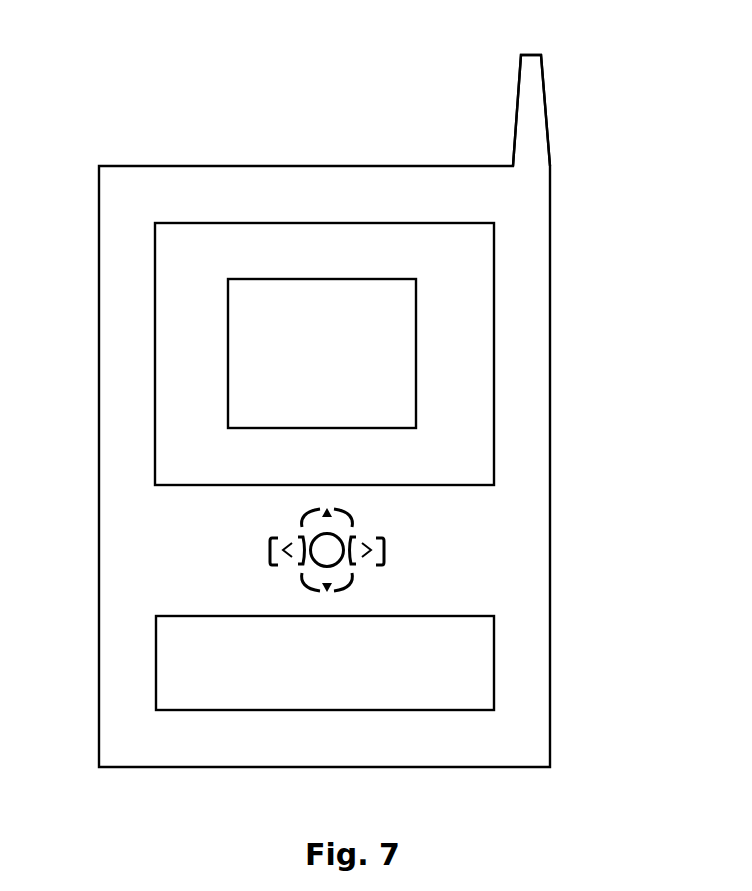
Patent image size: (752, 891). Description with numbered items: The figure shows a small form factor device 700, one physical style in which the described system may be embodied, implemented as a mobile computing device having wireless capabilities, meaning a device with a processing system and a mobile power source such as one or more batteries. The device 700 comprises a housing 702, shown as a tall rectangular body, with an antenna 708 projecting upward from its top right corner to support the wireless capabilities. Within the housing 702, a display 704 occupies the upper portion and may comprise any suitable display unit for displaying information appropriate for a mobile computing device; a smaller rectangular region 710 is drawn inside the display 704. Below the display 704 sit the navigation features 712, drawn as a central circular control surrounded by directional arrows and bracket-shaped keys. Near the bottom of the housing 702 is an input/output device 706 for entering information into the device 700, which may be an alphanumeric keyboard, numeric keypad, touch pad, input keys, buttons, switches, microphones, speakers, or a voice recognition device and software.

The small form factor device 700 is at (363, 388).
The housing 702 is at (550, 467).
The display 704 is at (495, 242).
The input/output (I/O) device 706 is at (494, 653).
The antenna 708 is at (517, 103).
The display window 710 is at (416, 376).
The navigation features 712 is at (416, 541).